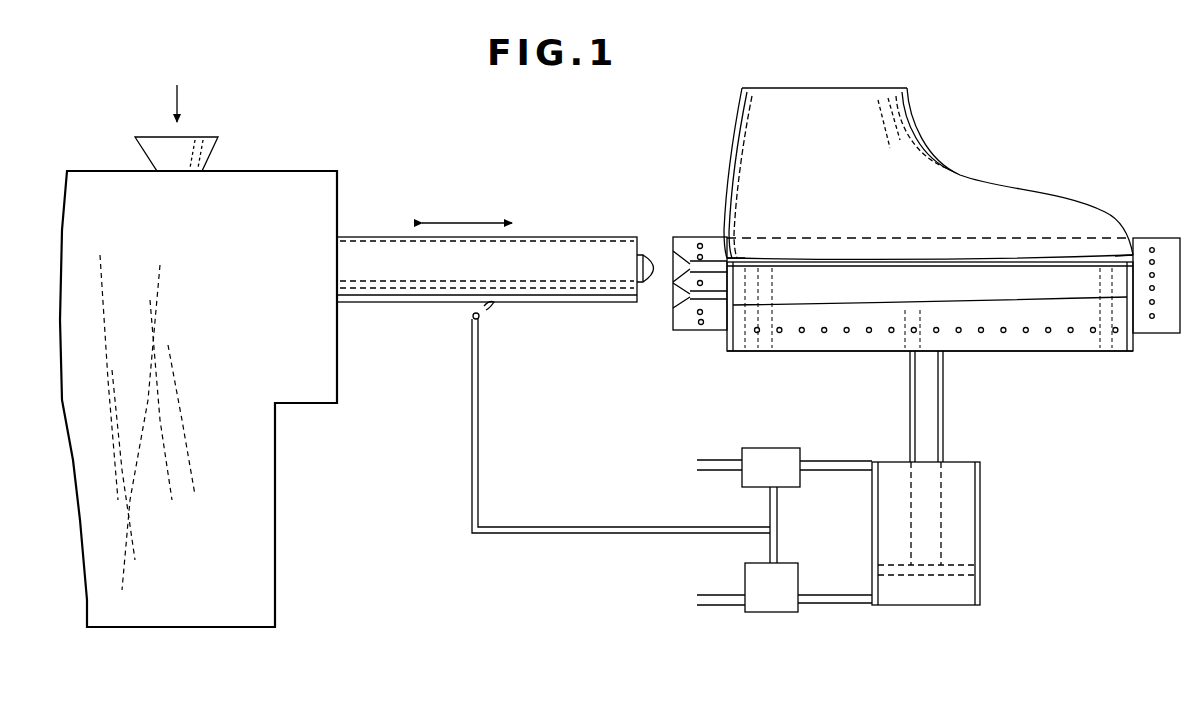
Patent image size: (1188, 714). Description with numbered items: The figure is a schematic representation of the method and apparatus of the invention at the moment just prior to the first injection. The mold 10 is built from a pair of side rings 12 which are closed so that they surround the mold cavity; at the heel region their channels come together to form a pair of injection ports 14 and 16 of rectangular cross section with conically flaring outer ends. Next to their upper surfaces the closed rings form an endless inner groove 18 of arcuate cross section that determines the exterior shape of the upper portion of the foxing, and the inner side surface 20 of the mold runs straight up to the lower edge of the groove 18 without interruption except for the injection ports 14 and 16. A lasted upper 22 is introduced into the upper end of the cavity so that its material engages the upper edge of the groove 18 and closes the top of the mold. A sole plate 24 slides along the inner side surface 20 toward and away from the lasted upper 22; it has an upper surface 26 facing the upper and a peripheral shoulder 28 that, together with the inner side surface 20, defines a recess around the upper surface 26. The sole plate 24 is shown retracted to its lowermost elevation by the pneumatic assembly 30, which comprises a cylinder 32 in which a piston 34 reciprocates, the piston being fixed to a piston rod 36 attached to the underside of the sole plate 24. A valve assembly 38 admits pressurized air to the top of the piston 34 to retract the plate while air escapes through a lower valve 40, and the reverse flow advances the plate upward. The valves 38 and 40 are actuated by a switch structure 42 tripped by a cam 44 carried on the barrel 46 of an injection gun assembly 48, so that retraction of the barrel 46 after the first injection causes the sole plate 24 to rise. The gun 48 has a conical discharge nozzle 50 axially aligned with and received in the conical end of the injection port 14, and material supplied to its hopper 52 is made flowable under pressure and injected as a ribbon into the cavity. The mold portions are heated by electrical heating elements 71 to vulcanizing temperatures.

The mold 10 is at (893, 251).
The side rings 12 is at (667, 259).
The injection port 14 is at (690, 262).
The injection port 16 is at (692, 306).
The inner groove 18 is at (727, 256).
The inner side surface 20 is at (930, 326).
The lasted upper 22 is at (928, 173).
The sole plate 24 is at (821, 350).
The upper surface 26 is at (955, 313).
The peripheral shoulder 28 is at (1135, 306).
The pneumatic assembly 30 is at (871, 518).
The cylinder 32 is at (958, 533).
The piston 34 is at (980, 568).
The piston rod 36 is at (942, 420).
The valve assembly 38 is at (786, 455).
The lower valve 40 is at (757, 605).
The switch structure 42 is at (481, 330).
The cam 44 is at (494, 304).
The barrel 46 is at (535, 279).
The injection gun assembly 48 is at (364, 222).
The conical discharge nozzle 50 is at (655, 255).
The hopper 52 is at (204, 152).
The electrical heating elements 71 is at (1028, 335).